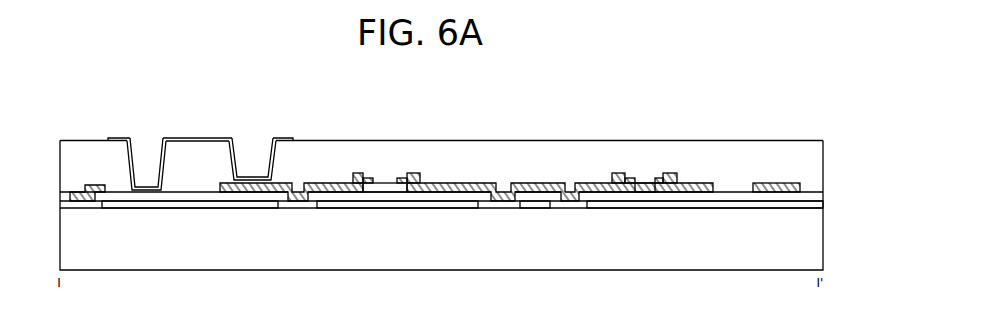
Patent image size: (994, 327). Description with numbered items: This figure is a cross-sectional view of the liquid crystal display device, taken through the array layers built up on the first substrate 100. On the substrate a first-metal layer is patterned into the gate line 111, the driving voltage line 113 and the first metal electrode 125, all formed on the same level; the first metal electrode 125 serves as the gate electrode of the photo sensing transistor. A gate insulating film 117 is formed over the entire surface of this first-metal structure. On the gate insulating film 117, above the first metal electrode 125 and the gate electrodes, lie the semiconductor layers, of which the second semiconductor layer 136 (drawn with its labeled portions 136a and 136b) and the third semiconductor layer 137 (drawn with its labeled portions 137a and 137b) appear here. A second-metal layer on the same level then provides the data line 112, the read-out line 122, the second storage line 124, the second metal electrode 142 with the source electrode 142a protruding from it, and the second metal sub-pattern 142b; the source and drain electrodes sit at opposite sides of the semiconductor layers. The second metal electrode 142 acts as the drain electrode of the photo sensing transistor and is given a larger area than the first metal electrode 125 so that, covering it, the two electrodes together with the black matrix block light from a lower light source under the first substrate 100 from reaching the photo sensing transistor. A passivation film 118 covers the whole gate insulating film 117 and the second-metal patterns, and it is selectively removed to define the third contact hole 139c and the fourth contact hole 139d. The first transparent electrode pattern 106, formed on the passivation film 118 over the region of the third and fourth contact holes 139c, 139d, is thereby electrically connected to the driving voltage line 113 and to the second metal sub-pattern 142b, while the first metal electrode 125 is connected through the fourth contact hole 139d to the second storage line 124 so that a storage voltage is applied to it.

The first substrate 100 is at (815, 237).
The first transparent electrode pattern 106 is at (178, 139).
The gate line 111 is at (640, 208).
The data line 112 is at (95, 185).
The driving voltage line 113 is at (194, 208).
The gate insulating film 117 is at (815, 196).
The passivation film 118 is at (815, 158).
The read-out line 122 is at (703, 183).
The second storage line 124 is at (777, 183).
The first metal electrode 125 is at (376, 208).
The second semiconductor layer 136 is at (659, 130).
The active layer 136a is at (663, 177).
The ohmic contact layer 136b is at (628, 178).
The third semiconductor layer 137 is at (399, 130).
The active layer 137a is at (403, 178).
The ohmic contact layer 137b is at (368, 179).
The third contact hole 139c is at (149, 139).
The fourth contact hole 139d is at (254, 139).
The second metal electrode 142 is at (450, 184).
The source electrode 142a is at (622, 172).
The second metal sub-pattern 142b is at (357, 173).